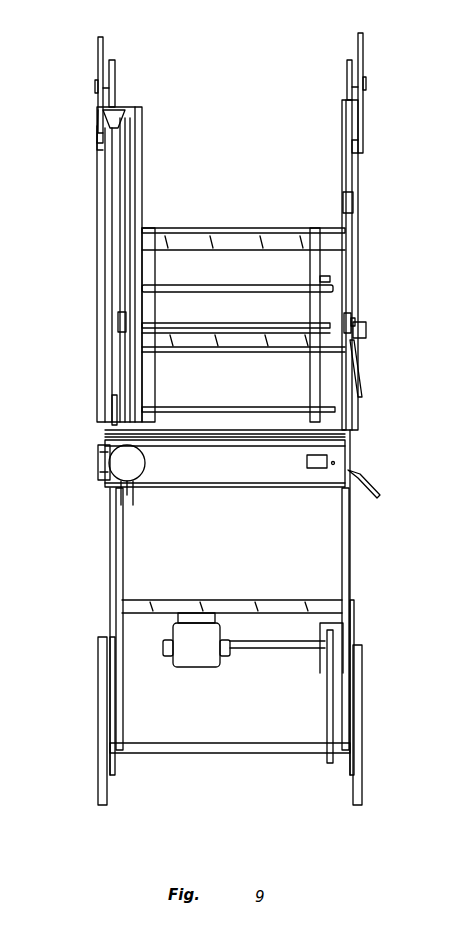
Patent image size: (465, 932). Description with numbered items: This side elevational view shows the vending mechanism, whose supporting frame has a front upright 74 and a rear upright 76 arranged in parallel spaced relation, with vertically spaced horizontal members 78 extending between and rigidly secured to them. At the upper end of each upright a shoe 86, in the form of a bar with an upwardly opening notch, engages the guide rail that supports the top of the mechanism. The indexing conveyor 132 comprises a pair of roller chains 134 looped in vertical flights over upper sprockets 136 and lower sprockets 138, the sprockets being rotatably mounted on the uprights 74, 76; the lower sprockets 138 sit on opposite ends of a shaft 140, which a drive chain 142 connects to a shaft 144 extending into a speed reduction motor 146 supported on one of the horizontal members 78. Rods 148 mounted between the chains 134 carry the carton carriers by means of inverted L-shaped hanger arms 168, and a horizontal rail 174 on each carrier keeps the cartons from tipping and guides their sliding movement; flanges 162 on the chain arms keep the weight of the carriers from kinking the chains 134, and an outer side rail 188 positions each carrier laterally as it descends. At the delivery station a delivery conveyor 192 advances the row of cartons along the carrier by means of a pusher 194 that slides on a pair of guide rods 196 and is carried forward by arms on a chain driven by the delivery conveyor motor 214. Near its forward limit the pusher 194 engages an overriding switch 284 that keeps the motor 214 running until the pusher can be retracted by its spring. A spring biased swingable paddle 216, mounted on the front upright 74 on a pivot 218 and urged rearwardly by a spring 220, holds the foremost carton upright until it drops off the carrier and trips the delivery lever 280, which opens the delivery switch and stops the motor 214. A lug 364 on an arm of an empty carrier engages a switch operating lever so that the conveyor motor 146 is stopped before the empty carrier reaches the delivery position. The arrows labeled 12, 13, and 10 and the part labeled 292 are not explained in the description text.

The shoe 86 is at (103, 40).
The upper sprocket 136 is at (115, 78).
The outer side rail 188 is at (140, 196).
The roller chain 134 is at (100, 158).
The indexing conveyor 132 is at (235, 153).
The section line 13 is at (84, 183).
The hanger arm 168 is at (150, 265).
The rod 148 is at (287, 228).
The horizontal member 78 is at (253, 233).
The horizontal rail 174 is at (205, 286).
The lug 364 is at (325, 278).
The rail 292 is at (283, 326).
The section line 12 is at (167, 300).
The section line 10 is at (238, 300).
The flange 162 is at (353, 198).
The spring 220 is at (356, 322).
The pivot 218 is at (366, 330).
The swingable paddle 216 is at (358, 392).
The pusher 194 is at (110, 403).
The guide rod 196 is at (194, 446).
The delivery conveyor motor 214 is at (122, 478).
The delivery conveyor 192 is at (88, 468).
The overriding switch 284 is at (307, 464).
The delivery lever 280 is at (377, 490).
The rear upright 76 is at (123, 570).
The front upright 74 is at (342, 571).
The shaft 140 is at (225, 753).
The lower sprocket 138 is at (112, 775).
The speed reduction motor 146 is at (196, 660).
The shaft 144 is at (282, 648).
The drive chain 142 is at (327, 712).